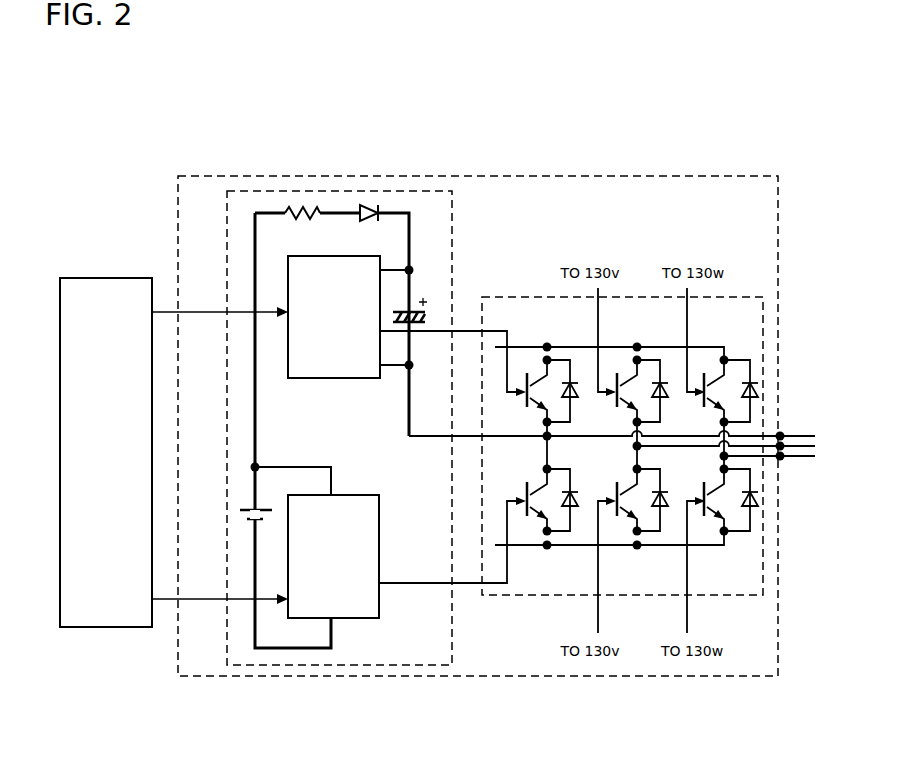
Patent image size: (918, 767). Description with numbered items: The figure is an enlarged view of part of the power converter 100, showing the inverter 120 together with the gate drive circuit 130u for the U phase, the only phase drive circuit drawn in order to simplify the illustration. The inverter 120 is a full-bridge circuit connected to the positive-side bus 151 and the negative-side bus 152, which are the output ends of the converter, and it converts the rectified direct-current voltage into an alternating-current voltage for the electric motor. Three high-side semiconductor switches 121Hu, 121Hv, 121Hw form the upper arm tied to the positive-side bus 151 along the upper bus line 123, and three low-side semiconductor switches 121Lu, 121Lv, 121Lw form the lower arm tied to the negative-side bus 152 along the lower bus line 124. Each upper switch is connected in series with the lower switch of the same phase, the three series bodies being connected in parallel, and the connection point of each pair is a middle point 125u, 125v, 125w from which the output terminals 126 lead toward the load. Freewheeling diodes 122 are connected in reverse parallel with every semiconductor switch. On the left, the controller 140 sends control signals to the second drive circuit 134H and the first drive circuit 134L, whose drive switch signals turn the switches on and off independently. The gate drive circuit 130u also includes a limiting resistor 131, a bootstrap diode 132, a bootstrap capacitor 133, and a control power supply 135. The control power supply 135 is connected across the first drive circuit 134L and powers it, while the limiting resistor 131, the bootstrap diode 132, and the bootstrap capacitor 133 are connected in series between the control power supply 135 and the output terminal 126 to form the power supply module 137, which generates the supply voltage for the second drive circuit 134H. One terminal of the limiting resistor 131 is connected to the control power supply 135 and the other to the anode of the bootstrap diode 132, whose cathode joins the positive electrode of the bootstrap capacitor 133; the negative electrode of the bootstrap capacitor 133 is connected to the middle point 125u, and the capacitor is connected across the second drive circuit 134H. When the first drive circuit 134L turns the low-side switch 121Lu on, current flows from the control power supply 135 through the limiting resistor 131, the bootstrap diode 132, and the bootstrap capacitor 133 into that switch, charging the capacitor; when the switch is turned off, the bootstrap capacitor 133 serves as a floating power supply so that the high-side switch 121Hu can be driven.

The power converter 100 is at (722, 175).
The inverter 120 is at (740, 297).
The semiconductor switch (U-phase upper arm) 121Hu is at (535, 386).
The semiconductor switch (V-phase upper arm) 121Hv is at (627, 386).
The semiconductor switch (W-phase upper arm) 121Hw is at (715, 386).
The semiconductor switch (U-phase lower arm) 121Lu is at (535, 496).
The semiconductor switch (V-phase lower arm) 121Lv is at (625, 496).
The semiconductor switch (W-phase lower arm) 121Lw is at (712, 496).
The freewheeling diode 122 is at (757, 387).
The positive bus line 123 is at (551, 345).
The negative bus line 124 is at (550, 549).
The middle point 125u is at (543, 432).
The V-phase output node 125v is at (633, 441).
The W-phase output node 125w is at (729, 459).
The output terminal 126 is at (786, 454).
The gate drive circuit (U phase) 130u is at (453, 240).
The limiting resistor 131 is at (305, 210).
The bootstrap diode 132 is at (365, 205).
The bootstrap capacitor 133 is at (414, 308).
The second drive circuit 134H is at (337, 380).
The first drive circuit 134L is at (347, 493).
The control power supply 135 is at (248, 510).
The power supply module 137 is at (353, 361).
The controller 140 is at (112, 278).
The positive-side bus 151 is at (683, 350).
The negative-side bus 152 is at (703, 547).